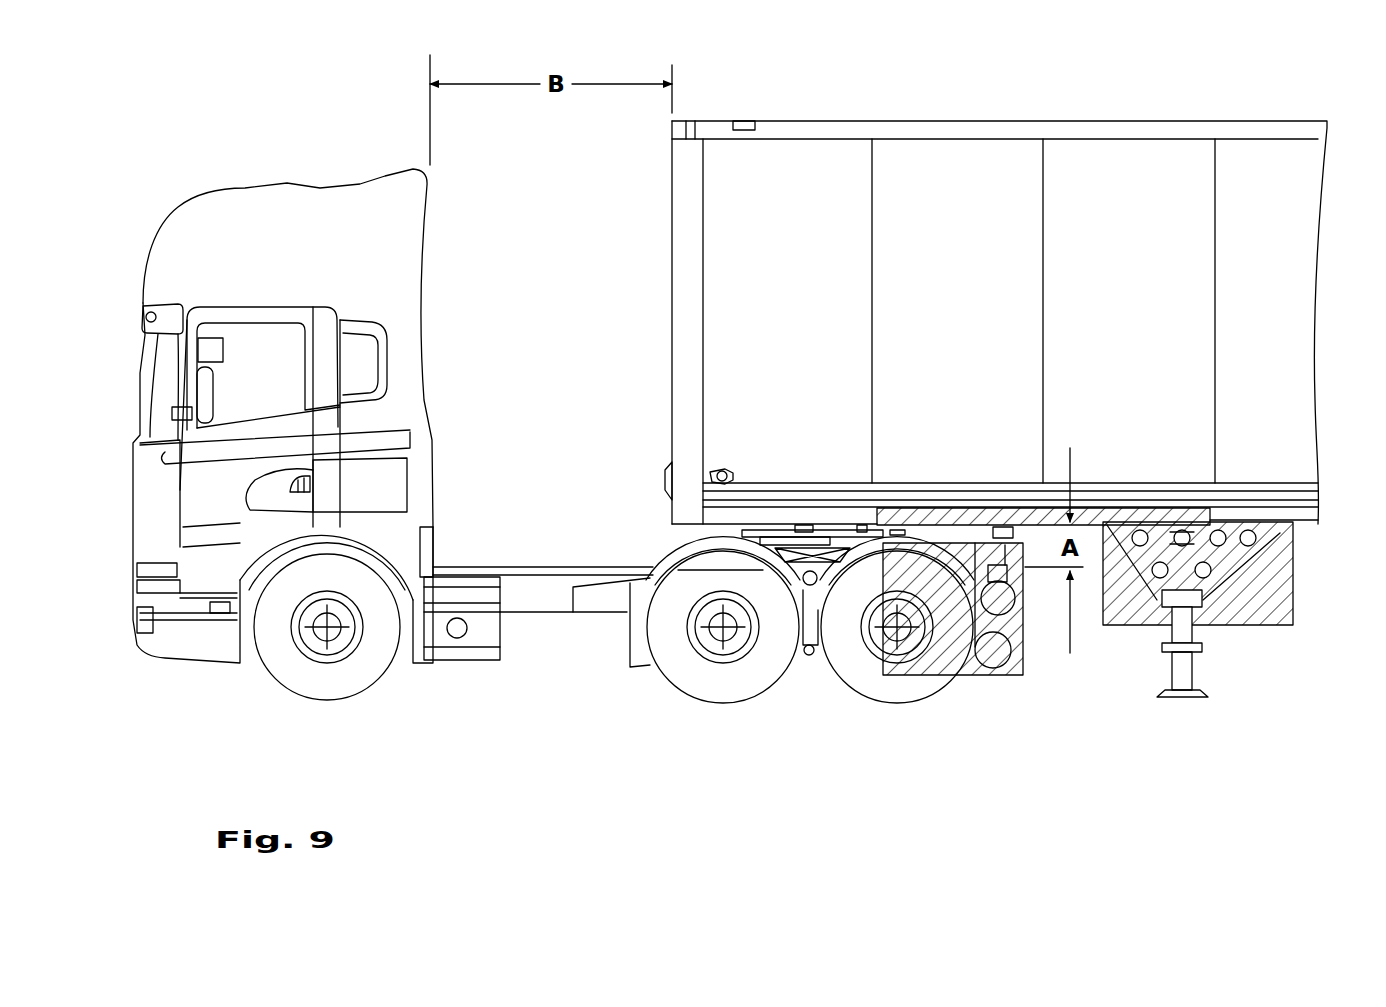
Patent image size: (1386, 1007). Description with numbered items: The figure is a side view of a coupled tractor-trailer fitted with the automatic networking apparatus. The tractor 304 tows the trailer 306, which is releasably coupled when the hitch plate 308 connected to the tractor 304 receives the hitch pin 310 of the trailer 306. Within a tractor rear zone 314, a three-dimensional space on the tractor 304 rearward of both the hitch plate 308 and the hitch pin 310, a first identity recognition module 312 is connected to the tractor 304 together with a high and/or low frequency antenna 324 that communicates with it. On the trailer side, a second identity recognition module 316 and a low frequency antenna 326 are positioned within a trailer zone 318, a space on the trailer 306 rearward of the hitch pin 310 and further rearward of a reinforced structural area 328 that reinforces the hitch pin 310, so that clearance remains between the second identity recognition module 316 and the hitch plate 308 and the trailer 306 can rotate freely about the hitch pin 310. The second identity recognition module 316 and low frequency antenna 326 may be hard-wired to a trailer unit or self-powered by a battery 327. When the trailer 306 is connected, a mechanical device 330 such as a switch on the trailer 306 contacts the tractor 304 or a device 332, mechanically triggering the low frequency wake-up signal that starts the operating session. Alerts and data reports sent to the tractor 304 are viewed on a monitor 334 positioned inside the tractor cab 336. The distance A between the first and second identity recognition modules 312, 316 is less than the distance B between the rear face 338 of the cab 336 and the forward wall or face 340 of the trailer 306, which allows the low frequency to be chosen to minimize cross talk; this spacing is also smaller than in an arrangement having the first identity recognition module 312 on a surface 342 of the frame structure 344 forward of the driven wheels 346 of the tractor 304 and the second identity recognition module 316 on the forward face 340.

The tractor 304 is at (210, 190).
The trailer 306 is at (1283, 162).
The hitch plate 308 is at (850, 540).
The hitch pin 310 is at (806, 540).
The first identity recognition module 312 is at (1028, 625).
The tractor rear zone 314 is at (1006, 590).
The second identity recognition module 316 is at (1003, 540).
The trailer zone 318 is at (1140, 522).
The high and/or low frequency antenna 324 is at (1082, 508).
The low frequency antenna 326 is at (1010, 530).
The battery 327 is at (712, 473).
The reinforced structural area 328 is at (778, 512).
The mechanical device 330 is at (868, 540).
The device 332 is at (900, 555).
The monitor 334 is at (213, 338).
The tractor cab 336 is at (315, 218).
The rear face 338 is at (440, 310).
The forward wall or face 340 is at (666, 242).
The surface 342 is at (604, 565).
The frame structure 344 is at (536, 598).
The driven wheels 346 is at (684, 664).